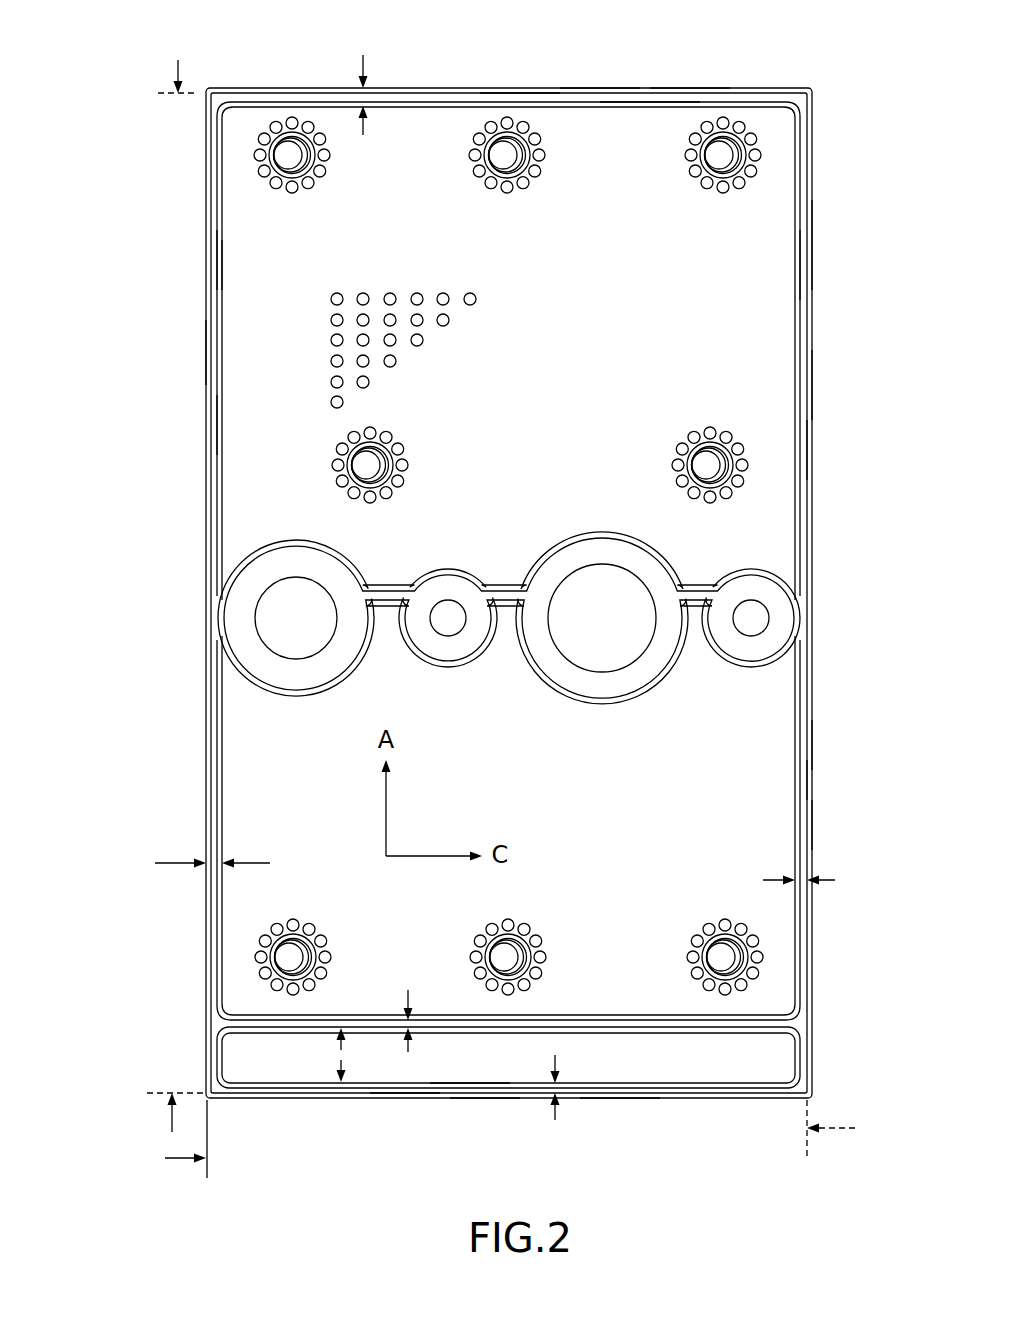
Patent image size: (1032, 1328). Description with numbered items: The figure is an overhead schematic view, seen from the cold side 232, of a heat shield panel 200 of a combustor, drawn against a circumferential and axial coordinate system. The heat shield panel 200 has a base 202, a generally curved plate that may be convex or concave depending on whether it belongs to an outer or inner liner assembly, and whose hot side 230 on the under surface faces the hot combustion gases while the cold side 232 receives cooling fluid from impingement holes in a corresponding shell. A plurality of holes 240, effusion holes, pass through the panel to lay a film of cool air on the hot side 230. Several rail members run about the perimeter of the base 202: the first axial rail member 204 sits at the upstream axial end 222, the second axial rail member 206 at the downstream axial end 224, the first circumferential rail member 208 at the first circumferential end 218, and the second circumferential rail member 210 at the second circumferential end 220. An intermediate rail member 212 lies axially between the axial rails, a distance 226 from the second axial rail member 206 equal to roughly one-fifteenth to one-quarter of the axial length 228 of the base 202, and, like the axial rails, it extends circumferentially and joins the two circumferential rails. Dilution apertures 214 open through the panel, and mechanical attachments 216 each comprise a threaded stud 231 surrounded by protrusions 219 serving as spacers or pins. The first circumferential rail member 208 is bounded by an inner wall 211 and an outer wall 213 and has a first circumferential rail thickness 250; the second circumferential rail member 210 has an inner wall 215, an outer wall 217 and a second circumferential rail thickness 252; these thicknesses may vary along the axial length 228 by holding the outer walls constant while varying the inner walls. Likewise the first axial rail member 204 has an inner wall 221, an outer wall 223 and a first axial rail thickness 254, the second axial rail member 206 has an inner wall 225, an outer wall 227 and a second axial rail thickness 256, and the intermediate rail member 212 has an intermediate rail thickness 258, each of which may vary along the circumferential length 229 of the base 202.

The heat shield panel 200 is at (128, 58).
The base 202 is at (757, 812).
The first axial rail member 204 is at (600, 91).
The second axial rail member 206 is at (617, 1092).
The first circumferential rail member 208 is at (207, 352).
The second circumferential rail member 210 is at (808, 388).
The first circumferential rail member inner wall 211 is at (222, 264).
The intermediate rail member 212 is at (683, 1020).
The first circumferential rail member outer wall 213 is at (216, 262).
The dilution apertures 214 is at (448, 648).
The second circumferential rail member inner wall 215 is at (797, 266).
The mechanical attachments 216 is at (508, 176).
The second circumferential rail member outer wall 217 is at (808, 242).
The first circumferential end 218 is at (217, 426).
The protrusions 219 is at (487, 176).
The second circumferential end 220 is at (808, 443).
The first axial rail member inner wall 221 is at (648, 104).
The upstream axial end 222 is at (521, 91).
The first axial rail member outer wall 223 is at (683, 90).
The downstream axial end 224 is at (402, 1091).
The second axial rail member inner wall 225 is at (467, 1083).
The distance 226 is at (340, 1052).
The second axial rail member outer wall 227 is at (476, 1096).
The axial length 228 is at (170, 1120).
The circumferential length 229 is at (175, 1162).
The hot side 230 is at (755, 778).
The threaded stud 231 is at (511, 156).
The cold side 232 is at (730, 742).
The holes 240 is at (422, 343).
The first circumferential rail thickness 250 is at (185, 860).
The second circumferential rail thickness 252 is at (828, 880).
The first axial rail thickness 254 is at (366, 58).
The second axial rail thickness 256 is at (558, 1123).
The intermediate rail thickness 258 is at (408, 995).